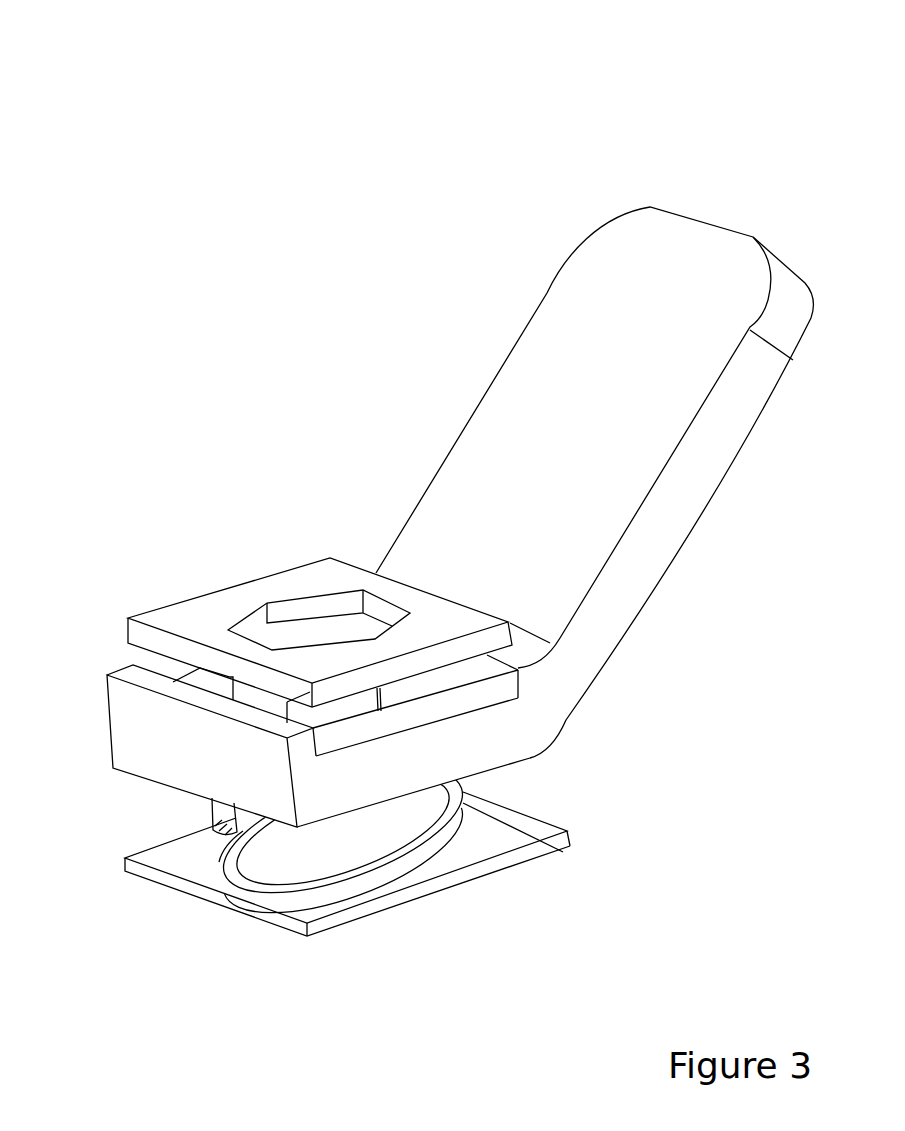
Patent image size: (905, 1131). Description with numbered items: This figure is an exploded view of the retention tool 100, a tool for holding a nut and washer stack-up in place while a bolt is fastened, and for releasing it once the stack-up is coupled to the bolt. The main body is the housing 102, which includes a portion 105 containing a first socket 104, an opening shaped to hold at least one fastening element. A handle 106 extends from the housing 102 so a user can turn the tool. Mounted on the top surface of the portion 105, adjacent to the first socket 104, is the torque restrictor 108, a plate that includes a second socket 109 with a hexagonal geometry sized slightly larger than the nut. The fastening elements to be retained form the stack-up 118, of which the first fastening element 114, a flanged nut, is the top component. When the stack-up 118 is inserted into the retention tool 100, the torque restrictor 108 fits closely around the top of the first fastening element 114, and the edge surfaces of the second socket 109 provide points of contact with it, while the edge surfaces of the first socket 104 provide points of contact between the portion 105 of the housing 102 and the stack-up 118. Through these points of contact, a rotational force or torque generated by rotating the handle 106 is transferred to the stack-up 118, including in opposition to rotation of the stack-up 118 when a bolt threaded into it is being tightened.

The retention tool 100 is at (643, 87).
The housing 102 is at (535, 712).
The first socket 104 is at (387, 712).
The portion 105 is at (357, 787).
The handle 106 is at (593, 402).
The torque restrictor 108 is at (208, 623).
The second socket 109 is at (372, 608).
The first fastening element 114 is at (375, 698).
The stack-up 118 is at (237, 818).